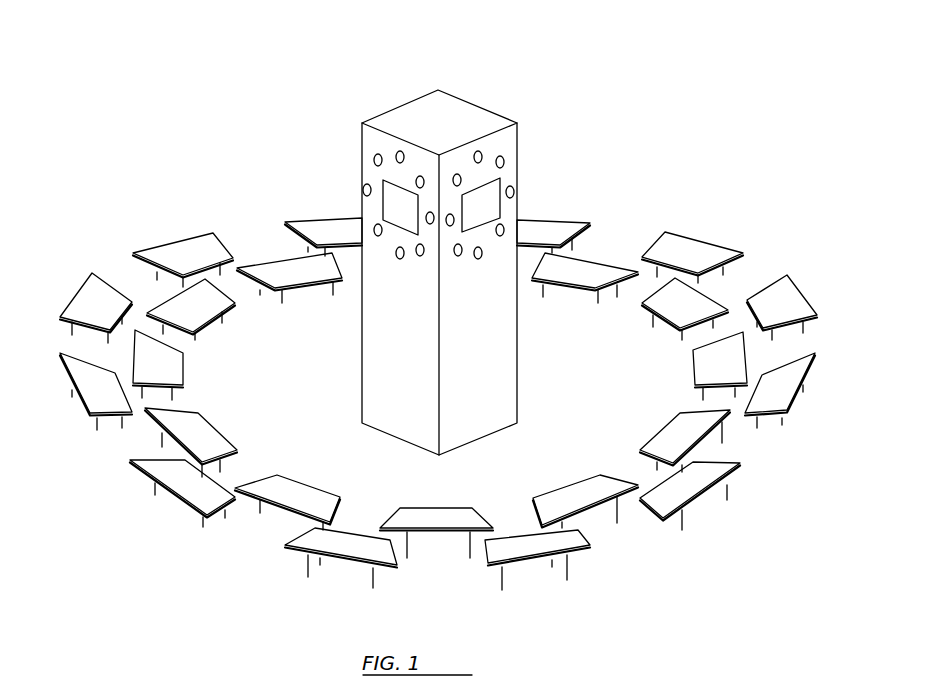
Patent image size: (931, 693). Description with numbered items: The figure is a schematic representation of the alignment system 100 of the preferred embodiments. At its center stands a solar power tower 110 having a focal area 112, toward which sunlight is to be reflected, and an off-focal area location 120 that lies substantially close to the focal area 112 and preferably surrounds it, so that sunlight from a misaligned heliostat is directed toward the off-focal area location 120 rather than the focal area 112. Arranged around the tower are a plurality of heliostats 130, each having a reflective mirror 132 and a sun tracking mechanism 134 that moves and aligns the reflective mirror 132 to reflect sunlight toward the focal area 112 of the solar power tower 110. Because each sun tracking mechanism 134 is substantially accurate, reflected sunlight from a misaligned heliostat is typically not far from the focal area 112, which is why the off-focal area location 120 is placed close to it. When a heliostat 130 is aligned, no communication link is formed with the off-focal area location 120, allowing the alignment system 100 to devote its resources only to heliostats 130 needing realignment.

The alignment system 100 is at (182, 122).
The solar power tower 110 is at (402, 414).
The focal area 112 is at (457, 205).
The off-focal area location 120 is at (478, 148).
The heliostats 130 is at (780, 270).
The reflective mirror 132 is at (685, 247).
The sun tracking mechanism 134 is at (788, 429).